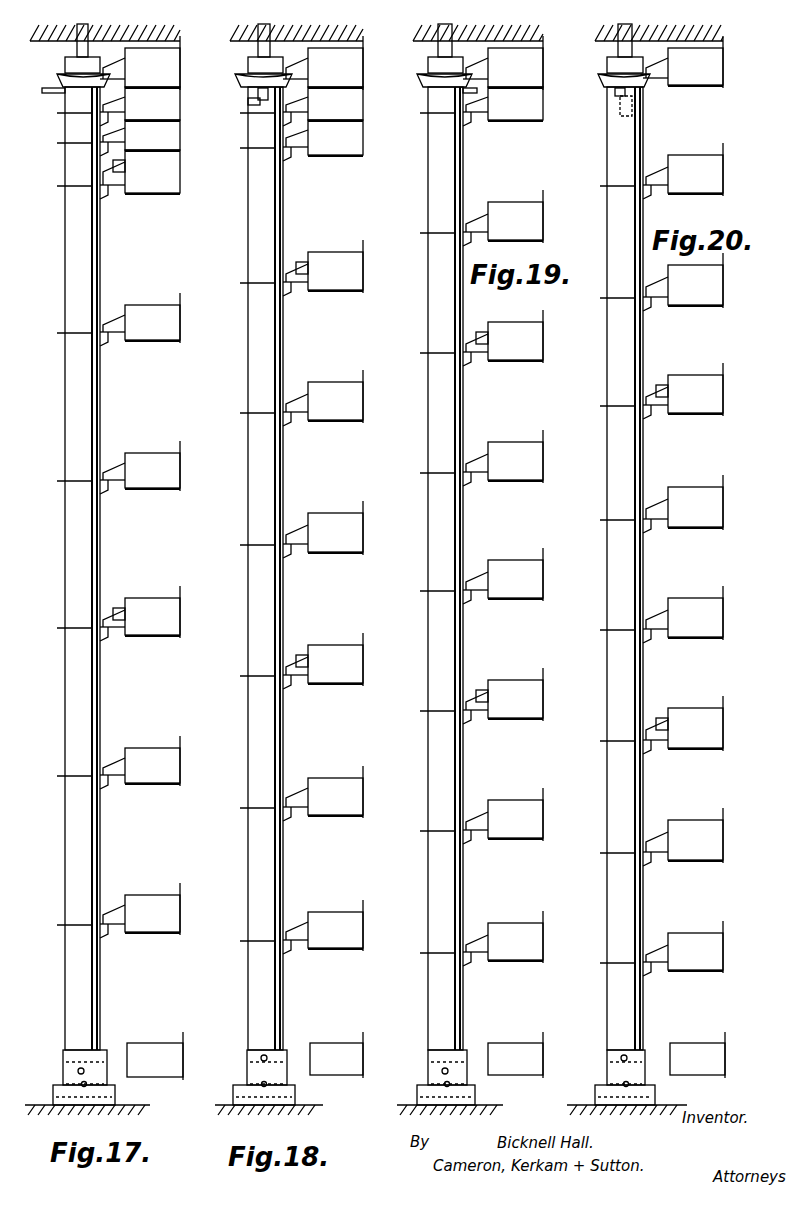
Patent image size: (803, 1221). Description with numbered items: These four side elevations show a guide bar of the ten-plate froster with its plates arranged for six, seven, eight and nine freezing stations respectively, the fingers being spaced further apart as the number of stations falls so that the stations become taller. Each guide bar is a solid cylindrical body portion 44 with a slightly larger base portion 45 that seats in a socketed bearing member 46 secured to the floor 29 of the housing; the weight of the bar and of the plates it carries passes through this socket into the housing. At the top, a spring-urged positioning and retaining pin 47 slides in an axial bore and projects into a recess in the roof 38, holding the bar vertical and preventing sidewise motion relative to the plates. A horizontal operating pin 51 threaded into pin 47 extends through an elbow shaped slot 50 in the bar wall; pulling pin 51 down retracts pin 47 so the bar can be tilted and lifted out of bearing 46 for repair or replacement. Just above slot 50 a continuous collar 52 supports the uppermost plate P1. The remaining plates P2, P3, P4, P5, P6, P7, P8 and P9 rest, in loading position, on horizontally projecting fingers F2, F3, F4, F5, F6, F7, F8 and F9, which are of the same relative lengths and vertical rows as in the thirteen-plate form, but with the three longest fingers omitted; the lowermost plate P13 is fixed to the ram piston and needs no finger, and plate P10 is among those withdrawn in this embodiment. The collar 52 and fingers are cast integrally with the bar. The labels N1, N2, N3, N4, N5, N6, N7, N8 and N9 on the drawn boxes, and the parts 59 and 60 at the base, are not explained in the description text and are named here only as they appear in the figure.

In FIG. 17, the roof 38 is at (180, 41).
In FIG. 18, the roof 38 is at (363, 41).
In FIG. 19, the roof 38 is at (543, 41).
In FIG. 20, the roof 38 is at (723, 41).
In FIG. 17, the positioning and retaining pin 47 is at (77, 48).
In FIG. 18, the positioning and retaining pin 47 is at (258, 48).
In FIG. 19, the positioning and retaining pin 47 is at (438, 48).
In FIG. 20, the positioning and retaining pin 47 is at (618, 48).
In FIG. 17, the collar 52 is at (68, 80).
In FIG. 18, the collar 52 is at (250, 80).
In FIG. 19, the collar 52 is at (432, 80).
In FIG. 20, the collar 52 is at (612, 80).
In FIG. 17, the operating pin 51 is at (42, 90).
In FIG. 18, the operating pin 51 is at (258, 94).
In FIG. 19, the operating pin 51 is at (463, 91).
In FIG. 20, the operating pin 51 is at (615, 92).
In FIG. 18, the elbow shaped slot 50 is at (250, 104).
In FIG. 20, the elbow shaped slot 50 is at (632, 106).
In FIG. 17, the body portion 44 is at (64, 568).
In FIG. 17, the base portion 45 is at (105, 1052).
In FIG. 18, the base portion 45 is at (285, 1052).
In FIG. 19, the base portion 45 is at (466, 1052).
In FIG. 20, the base portion 45 is at (644, 1052).
In FIG. 17, the socketed bearing member 46 is at (54, 1096).
In FIG. 18, the socketed bearing member 46 is at (234, 1096).
In FIG. 19, the socketed bearing member 46 is at (418, 1097).
In FIG. 20, the socketed bearing member 46 is at (596, 1096).
In FIG. 17, the pivot pin 59 is at (81, 1083).
In FIG. 18, the pivot pin 59 is at (261, 1083).
In FIG. 19, the pivot pin 59 is at (444, 1083).
In FIG. 20, the pivot pin 59 is at (623, 1083).
In FIG. 17, the pin 60 is at (78, 1069).
In FIG. 18, the pin 60 is at (261, 1056).
In FIG. 19, the pin 60 is at (442, 1069).
In FIG. 20, the pin 60 is at (621, 1056).
In FIG. 17, the floor 29 is at (60, 1106).
In FIG. 18, the floor 29 is at (323, 1106).
In FIG. 19, the floor 29 is at (503, 1106).
In FIG. 17, the contact box 1 N1 is at (140, 63).
In FIG. 18, the contact box 1 N1 is at (323, 63).
In FIG. 19, the contact box 1 N1 is at (503, 63).
In FIG. 20, the contact box 1 N1 is at (683, 62).
In FIG. 17, the contact box 2 N2 is at (140, 103).
In FIG. 18, the contact box 2 N2 is at (323, 103).
In FIG. 19, the contact box 2 N2 is at (503, 103).
In FIG. 20, the contact box 2 N2 is at (683, 169).
In FIG. 17, the contact box 3 N3 is at (140, 135).
In FIG. 18, the contact box 3 N3 is at (323, 137).
In FIG. 19, the contact box 3 N3 is at (503, 216).
In FIG. 20, the contact box 3 N3 is at (683, 280).
In FIG. 17, the contact box 4 N4 is at (140, 171).
In FIG. 18, the contact box 4 N4 is at (323, 266).
In FIG. 19, the contact box 4 N4 is at (503, 336).
In FIG. 20, the contact box 4 N4 is at (683, 389).
In FIG. 17, the contact box 5 N5 is at (140, 318).
In FIG. 18, the contact box 5 N5 is at (323, 396).
In FIG. 19, the contact box 5 N5 is at (503, 456).
In FIG. 20, the contact box 5 N5 is at (683, 502).
In FIG. 17, the contact box 6 N6 is at (140, 466).
In FIG. 18, the contact box 6 N6 is at (323, 528).
In FIG. 19, the contact box 6 N6 is at (503, 574).
In FIG. 20, the contact box 6 N6 is at (683, 613).
In FIG. 17, the contact box 7 N7 is at (140, 612).
In FIG. 18, the contact box 7 N7 is at (323, 659).
In FIG. 19, the contact box 7 N7 is at (503, 694).
In FIG. 20, the contact box 7 N7 is at (683, 723).
In FIG. 17, the contact box 8 N8 is at (140, 761).
In FIG. 18, the contact box 8 N8 is at (323, 792).
In FIG. 19, the contact box 8 N8 is at (503, 814).
In FIG. 20, the contact box 8 N8 is at (683, 835).
In FIG. 17, the contact box 9 N9 is at (140, 909).
In FIG. 18, the contact box 9 N9 is at (323, 925).
In FIG. 19, the contact box 9 N9 is at (503, 937).
In FIG. 20, the contact box 9 N9 is at (683, 947).
In FIG. 17, the uppermost plate P1 is at (182, 83).
In FIG. 18, the uppermost plate P1 is at (365, 83).
In FIG. 19, the uppermost plate P1 is at (545, 83).
In FIG. 20, the uppermost plate P1 is at (725, 83).
In FIG. 17, the plate P2 is at (182, 116).
In FIG. 18, the plate P2 is at (365, 116).
In FIG. 19, the plate P2 is at (545, 116).
In FIG. 20, the plate P2 is at (725, 189).
In FIG. 17, the plate P3 is at (182, 146).
In FIG. 18, the plate P3 is at (365, 151).
In FIG. 19, the plate P3 is at (545, 236).
In FIG. 20, the plate P3 is at (725, 301).
In FIG. 17, the plate P4 is at (182, 189).
In FIG. 18, the plate P4 is at (365, 286).
In FIG. 19, the plate P4 is at (545, 356).
In FIG. 20, the plate P4 is at (725, 409).
In FIG. 17, the plate P5 is at (182, 336).
In FIG. 18, the plate P5 is at (365, 416).
In FIG. 19, the plate P5 is at (545, 476).
In FIG. 20, the plate P5 is at (725, 523).
In FIG. 17, the plate P6 is at (182, 484).
In FIG. 18, the plate P6 is at (365, 548).
In FIG. 19, the plate P6 is at (545, 594).
In FIG. 20, the plate P6 is at (725, 633).
In FIG. 17, the plate P7 is at (182, 631).
In FIG. 18, the plate P7 is at (365, 679).
In FIG. 19, the plate P7 is at (545, 714).
In FIG. 20, the plate P7 is at (725, 744).
In FIG. 17, the plate P8 is at (182, 779).
In FIG. 18, the plate P8 is at (365, 811).
In FIG. 19, the plate P8 is at (545, 834).
In FIG. 20, the plate P8 is at (725, 856).
In FIG. 18, the plate P9 is at (365, 944).
In FIG. 19, the plate P9 is at (545, 956).
In FIG. 20, the plate P9 is at (725, 966).
In FIG. 17, the plate P10 is at (182, 928).
In FIG. 17, the lowermost plate P13 is at (152, 1062).
In FIG. 18, the lowermost plate P13 is at (334, 1062).
In FIG. 19, the lowermost plate P13 is at (498, 1062).
In FIG. 20, the lowermost plate P13 is at (682, 1062).
In FIG. 17, the finger F2 is at (102, 120).
In FIG. 18, the finger F2 is at (285, 120).
In FIG. 19, the finger F2 is at (465, 120).
In FIG. 20, the finger F2 is at (645, 191).
In FIG. 17, the finger F3 is at (102, 150).
In FIG. 18, the finger F3 is at (285, 155).
In FIG. 19, the finger F3 is at (465, 238).
In FIG. 20, the finger F3 is at (645, 303).
In FIG. 17, the finger F4 is at (102, 192).
In FIG. 18, the finger F4 is at (285, 288).
In FIG. 19, the finger F4 is at (465, 358).
In FIG. 20, the finger F4 is at (645, 411).
In FIG. 17, the finger F5 is at (102, 338).
In FIG. 18, the finger F5 is at (285, 418).
In FIG. 19, the finger F5 is at (465, 478).
In FIG. 20, the finger F5 is at (645, 525).
In FIG. 17, the finger F6 is at (102, 486).
In FIG. 18, the finger F6 is at (285, 550).
In FIG. 19, the finger F6 is at (465, 596).
In FIG. 20, the finger F6 is at (645, 635).
In FIG. 17, the finger F7 is at (102, 633).
In FIG. 18, the finger F7 is at (285, 681).
In FIG. 19, the finger F7 is at (465, 716).
In FIG. 20, the finger F7 is at (645, 746).
In FIG. 17, the finger F8 is at (102, 781).
In FIG. 18, the finger F8 is at (285, 813).
In FIG. 19, the finger F8 is at (465, 836).
In FIG. 20, the finger F8 is at (645, 858).
In FIG. 17, the finger F9 is at (102, 930).
In FIG. 18, the finger F9 is at (285, 946).
In FIG. 19, the finger F9 is at (465, 958).
In FIG. 20, the finger F9 is at (645, 968).